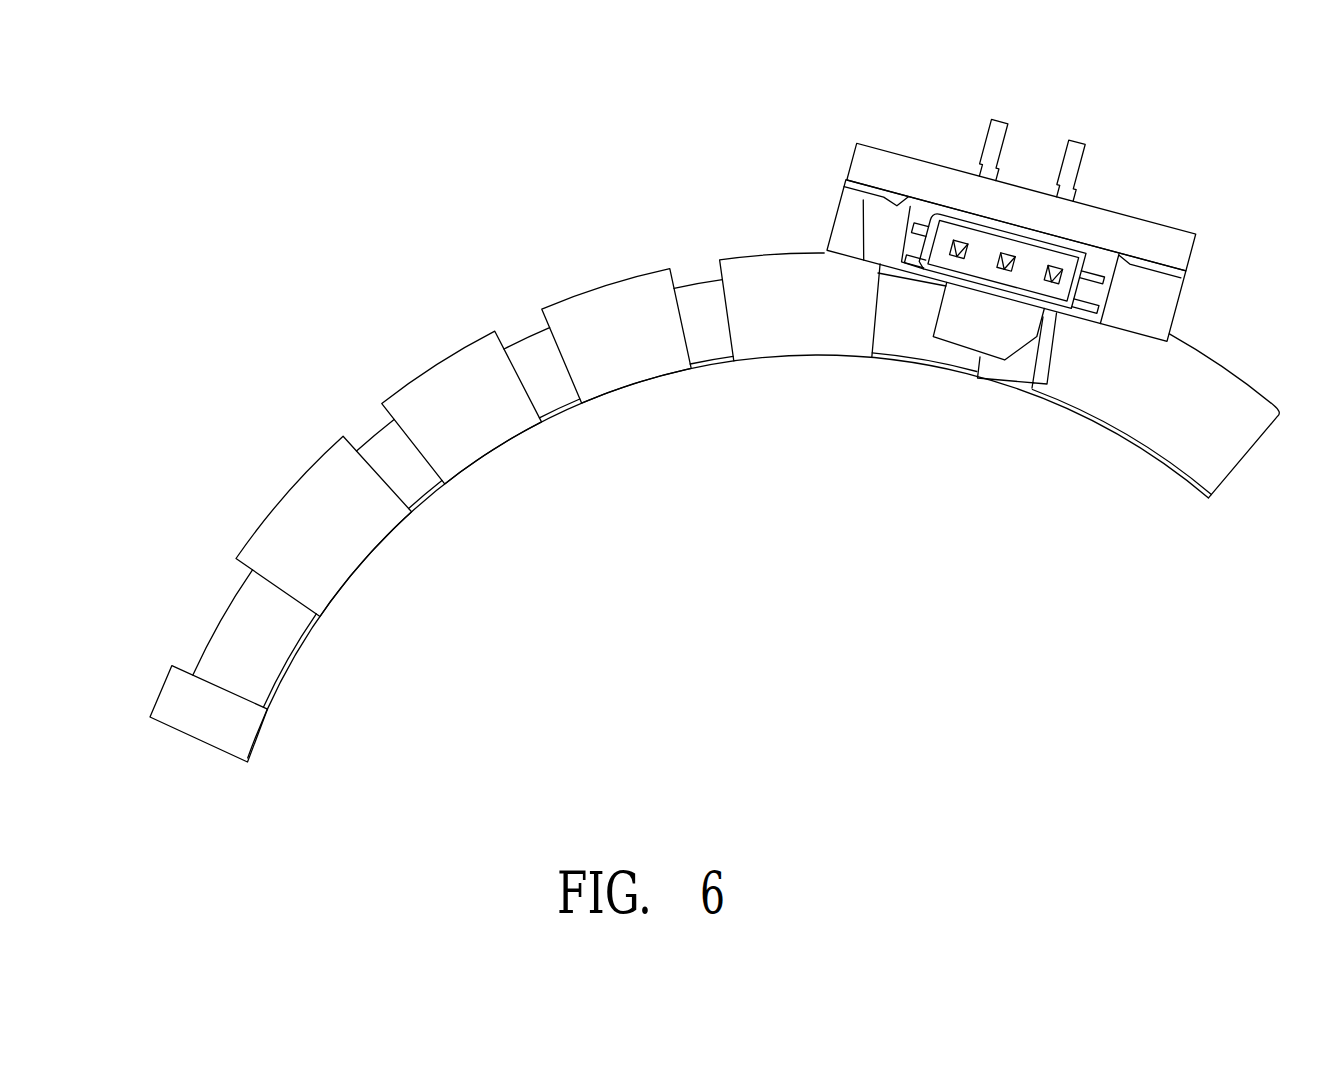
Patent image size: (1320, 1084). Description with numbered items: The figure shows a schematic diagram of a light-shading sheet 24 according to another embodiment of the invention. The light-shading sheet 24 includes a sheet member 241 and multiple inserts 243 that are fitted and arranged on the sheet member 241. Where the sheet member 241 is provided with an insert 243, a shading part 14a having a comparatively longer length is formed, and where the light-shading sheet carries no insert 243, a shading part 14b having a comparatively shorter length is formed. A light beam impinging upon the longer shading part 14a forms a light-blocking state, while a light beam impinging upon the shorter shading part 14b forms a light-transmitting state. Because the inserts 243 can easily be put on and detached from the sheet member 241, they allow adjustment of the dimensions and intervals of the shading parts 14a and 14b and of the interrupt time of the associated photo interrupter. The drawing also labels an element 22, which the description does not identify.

The connector 22 is at (1087, 197).
The shading part 14a is at (457, 387).
The shading part 14b is at (538, 352).
The light-shading sheet 24 is at (430, 512).
The sheet member 241 is at (713, 370).
The inserts 243 is at (282, 494).